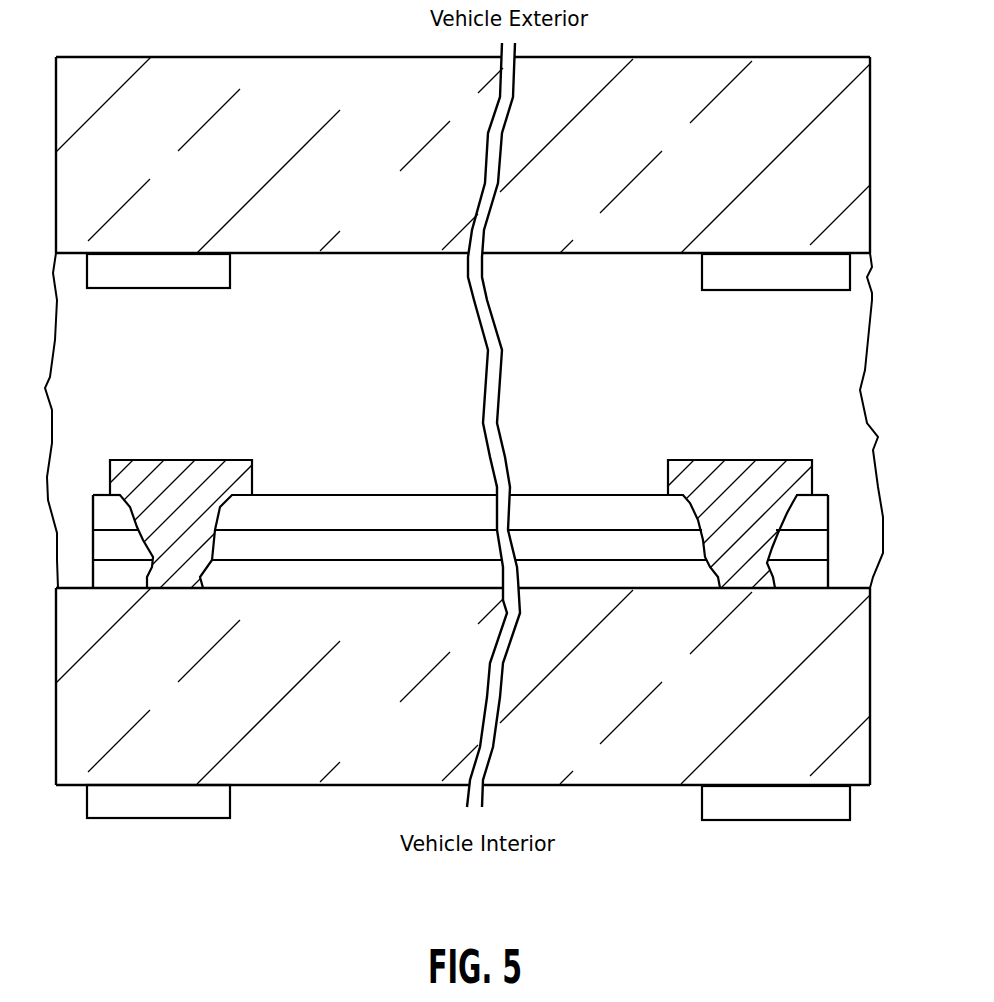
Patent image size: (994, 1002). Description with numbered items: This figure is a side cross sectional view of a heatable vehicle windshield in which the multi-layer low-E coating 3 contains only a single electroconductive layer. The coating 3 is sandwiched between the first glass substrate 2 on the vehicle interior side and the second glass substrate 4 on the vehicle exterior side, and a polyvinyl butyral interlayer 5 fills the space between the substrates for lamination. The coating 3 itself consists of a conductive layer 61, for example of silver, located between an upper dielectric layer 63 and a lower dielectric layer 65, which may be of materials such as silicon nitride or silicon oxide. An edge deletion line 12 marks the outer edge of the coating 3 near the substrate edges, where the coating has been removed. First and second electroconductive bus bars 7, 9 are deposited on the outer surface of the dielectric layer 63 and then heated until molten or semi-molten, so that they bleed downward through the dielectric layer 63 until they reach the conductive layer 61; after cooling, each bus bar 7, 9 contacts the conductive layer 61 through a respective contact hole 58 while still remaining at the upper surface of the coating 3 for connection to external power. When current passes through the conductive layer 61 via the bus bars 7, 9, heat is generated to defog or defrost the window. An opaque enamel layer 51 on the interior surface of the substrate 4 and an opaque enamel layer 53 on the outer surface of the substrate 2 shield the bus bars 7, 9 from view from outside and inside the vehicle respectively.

The first glass substrate 2 is at (638, 760).
The multi-layer low-E coating 3 is at (482, 543).
The second glass substrate 4 is at (685, 77).
The polyvinyl butyral interlayer 5 is at (805, 377).
The first electroconductive bus bar 7 is at (192, 483).
The second electroconductive bus bar 9 is at (705, 467).
The edge deletion line 12 is at (92, 545).
The opaque enamel layer 51 is at (202, 278).
The opaque enamel layer 53 is at (202, 812).
The contact hole 58 is at (235, 512).
The conductive layer 61 is at (463, 548).
The dielectric layer 63 is at (413, 506).
The dielectric layer 65 is at (428, 577).